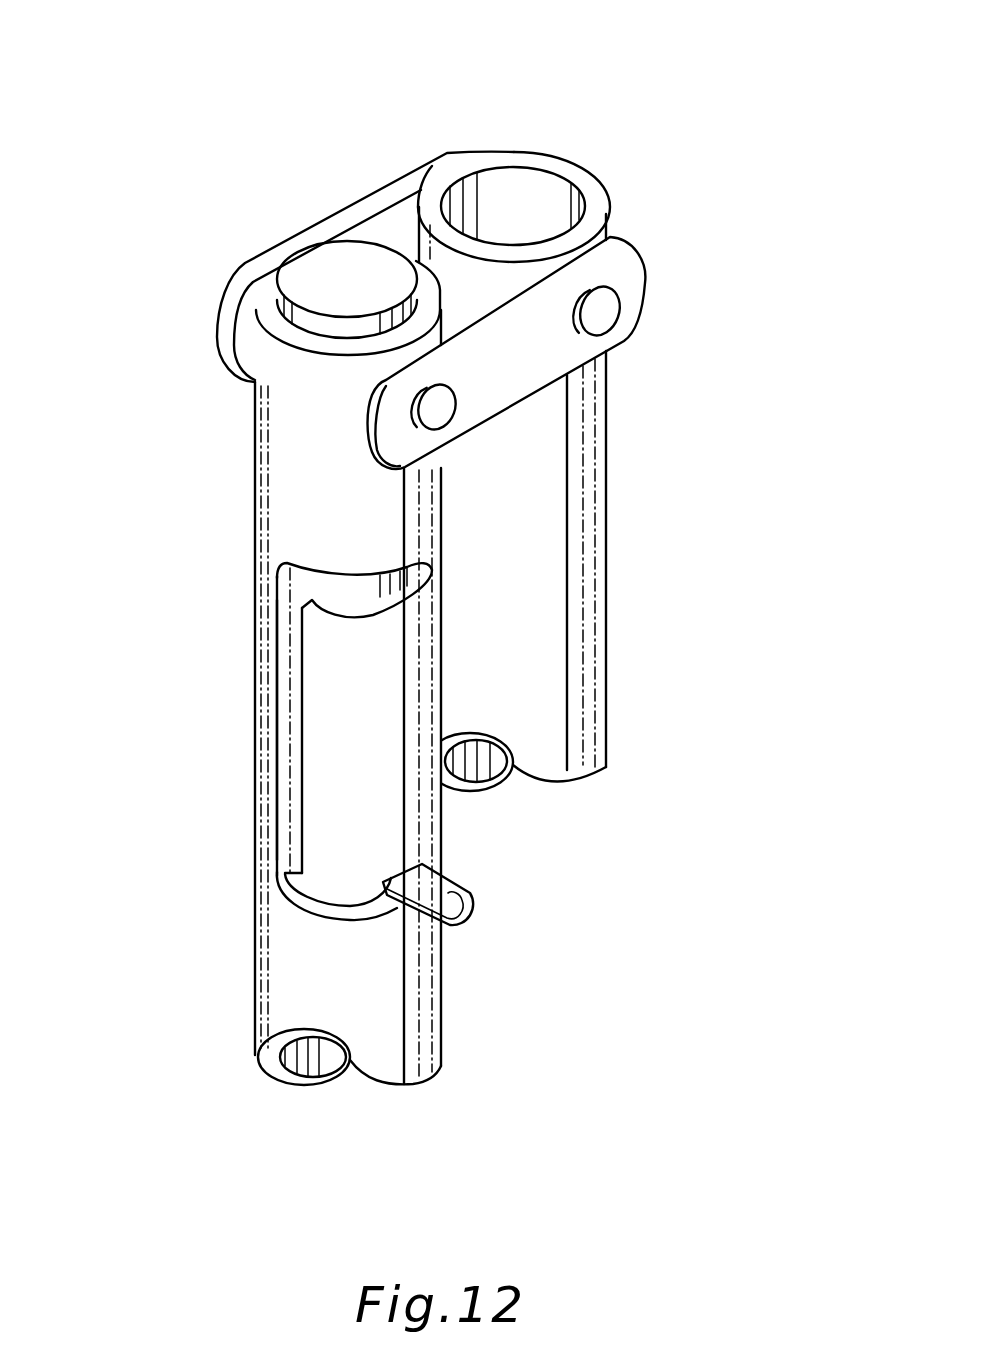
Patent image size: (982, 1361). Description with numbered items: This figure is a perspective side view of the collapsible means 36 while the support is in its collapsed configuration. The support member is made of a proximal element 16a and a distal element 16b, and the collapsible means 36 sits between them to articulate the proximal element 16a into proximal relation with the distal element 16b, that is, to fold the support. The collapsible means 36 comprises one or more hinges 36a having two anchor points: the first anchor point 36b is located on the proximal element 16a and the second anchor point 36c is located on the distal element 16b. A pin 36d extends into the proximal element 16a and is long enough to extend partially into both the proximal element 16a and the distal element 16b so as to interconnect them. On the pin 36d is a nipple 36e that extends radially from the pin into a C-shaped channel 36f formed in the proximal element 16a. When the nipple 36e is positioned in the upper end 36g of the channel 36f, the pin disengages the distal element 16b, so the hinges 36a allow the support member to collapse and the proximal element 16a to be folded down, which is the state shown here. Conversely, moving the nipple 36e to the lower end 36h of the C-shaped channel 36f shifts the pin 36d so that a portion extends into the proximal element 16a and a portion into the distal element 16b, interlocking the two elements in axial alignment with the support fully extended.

The collapsible means 36 is at (640, 120).
The hinge 36a is at (383, 192).
The first anchor point 36b is at (413, 398).
The second anchor point 36c is at (615, 322).
The pin 36d is at (327, 273).
The nipple 36e is at (472, 902).
The C-shaped channel 36f is at (277, 597).
The upper end of the channel 36g is at (343, 893).
The lower end of the channel 36h is at (365, 585).
The proximal element 16a is at (256, 977).
The distal element 16b is at (607, 636).